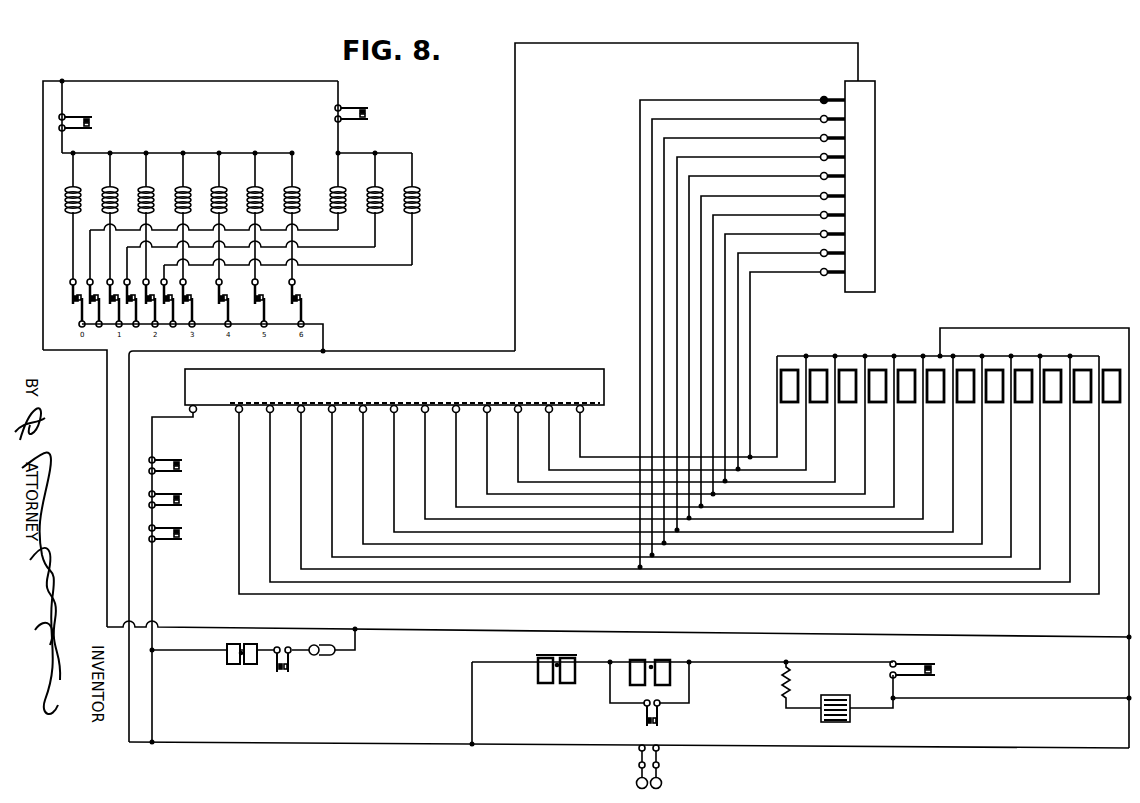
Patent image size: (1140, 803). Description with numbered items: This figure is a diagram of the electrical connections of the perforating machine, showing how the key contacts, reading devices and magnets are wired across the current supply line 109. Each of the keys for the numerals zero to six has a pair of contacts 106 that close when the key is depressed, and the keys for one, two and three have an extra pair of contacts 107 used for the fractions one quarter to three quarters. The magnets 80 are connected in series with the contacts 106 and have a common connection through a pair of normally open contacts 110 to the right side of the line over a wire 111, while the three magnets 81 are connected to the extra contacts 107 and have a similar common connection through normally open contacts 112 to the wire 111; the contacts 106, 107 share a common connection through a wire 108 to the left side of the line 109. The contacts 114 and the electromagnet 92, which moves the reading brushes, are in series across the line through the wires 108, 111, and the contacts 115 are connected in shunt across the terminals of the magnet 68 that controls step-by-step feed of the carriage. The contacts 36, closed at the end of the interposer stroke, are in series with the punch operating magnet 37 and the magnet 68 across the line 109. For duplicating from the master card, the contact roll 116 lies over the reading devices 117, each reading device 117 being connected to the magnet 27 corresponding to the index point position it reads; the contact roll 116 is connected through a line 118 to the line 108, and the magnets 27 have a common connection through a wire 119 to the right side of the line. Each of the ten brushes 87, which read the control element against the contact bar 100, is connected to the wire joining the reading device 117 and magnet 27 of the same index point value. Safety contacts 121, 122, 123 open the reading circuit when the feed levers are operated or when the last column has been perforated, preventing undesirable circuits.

The wire 111 is at (183, 82).
The normally open contacts 110 is at (90, 124).
The normally open contacts 112 is at (370, 113).
The magnets 80 is at (148, 190).
The magnets 81 is at (418, 192).
The contact bar 100 is at (878, 152).
The reading brushes 87 is at (838, 236).
The extra pair of contacts 107 is at (113, 300).
The pair of contacts 106 is at (184, 318).
The safety contacts 123 is at (186, 533).
The wire 108 is at (413, 347).
The reading devices 117 is at (512, 405).
The contact roll 116 is at (565, 378).
The wire 119 is at (1030, 329).
The magnets 27 is at (905, 384).
The safety contacts 121 is at (186, 466).
The safety contacts 122 is at (186, 500).
The line 118 is at (153, 578).
The electromagnet 92 is at (248, 665).
The contacts 114 is at (282, 675).
The punch operating magnet 37 is at (540, 676).
The magnet 68 is at (662, 671).
The contacts 115 is at (647, 719).
The current supply line 109 is at (649, 747).
The contacts 36 is at (932, 667).